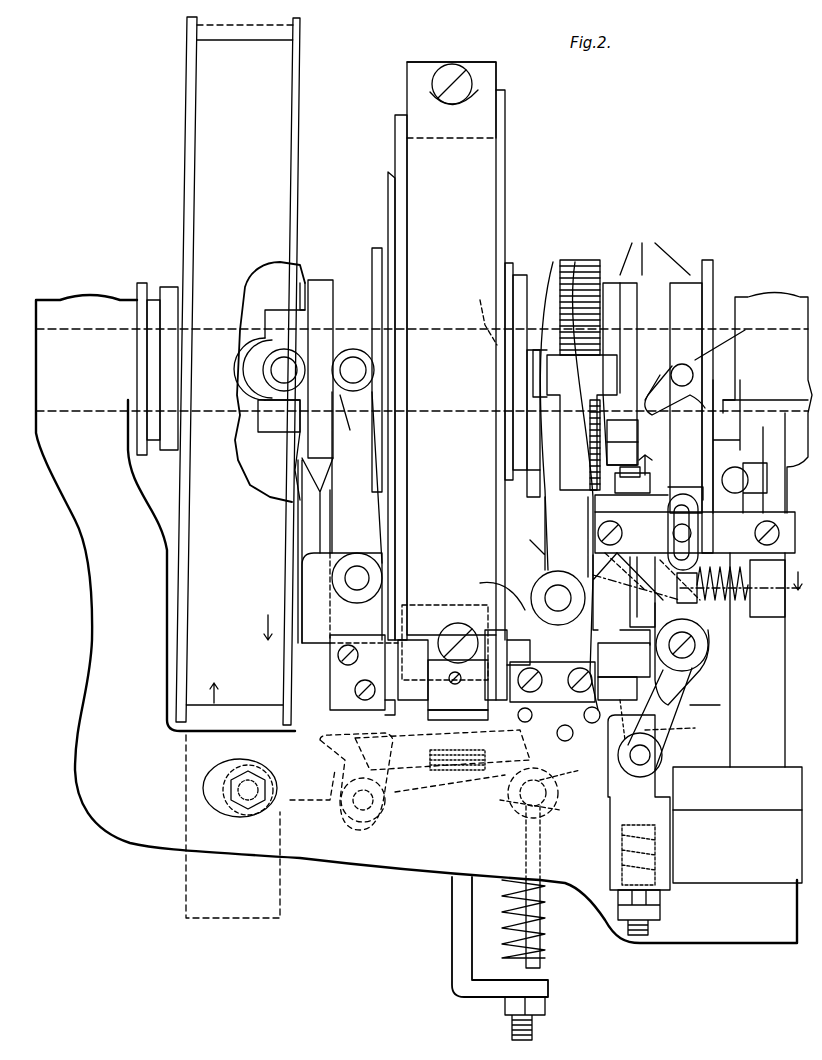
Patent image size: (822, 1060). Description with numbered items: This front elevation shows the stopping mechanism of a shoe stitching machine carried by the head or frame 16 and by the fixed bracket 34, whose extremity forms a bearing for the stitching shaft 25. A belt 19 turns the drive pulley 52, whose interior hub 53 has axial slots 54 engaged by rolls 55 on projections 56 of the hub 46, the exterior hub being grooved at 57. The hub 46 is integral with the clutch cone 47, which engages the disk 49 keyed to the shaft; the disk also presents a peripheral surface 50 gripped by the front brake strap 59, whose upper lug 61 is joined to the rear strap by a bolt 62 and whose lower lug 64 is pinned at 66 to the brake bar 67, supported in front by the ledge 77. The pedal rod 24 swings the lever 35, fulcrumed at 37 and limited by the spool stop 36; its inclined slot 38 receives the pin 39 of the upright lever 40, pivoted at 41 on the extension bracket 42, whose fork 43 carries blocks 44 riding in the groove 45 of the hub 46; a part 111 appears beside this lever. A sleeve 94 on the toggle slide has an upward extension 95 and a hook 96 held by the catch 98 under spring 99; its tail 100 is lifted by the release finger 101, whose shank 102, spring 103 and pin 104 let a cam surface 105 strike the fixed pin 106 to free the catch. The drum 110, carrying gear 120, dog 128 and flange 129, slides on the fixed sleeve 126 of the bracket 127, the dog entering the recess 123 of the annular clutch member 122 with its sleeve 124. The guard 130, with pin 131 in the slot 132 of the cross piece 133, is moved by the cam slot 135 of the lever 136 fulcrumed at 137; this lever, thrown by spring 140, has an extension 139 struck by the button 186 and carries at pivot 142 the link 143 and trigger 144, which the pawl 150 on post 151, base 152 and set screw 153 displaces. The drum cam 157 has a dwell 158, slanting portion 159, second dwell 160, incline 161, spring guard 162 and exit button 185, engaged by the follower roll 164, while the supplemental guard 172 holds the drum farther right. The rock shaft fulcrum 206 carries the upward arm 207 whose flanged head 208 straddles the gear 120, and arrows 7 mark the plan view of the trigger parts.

The section line 7 is at (512, 637).
The head or frame 16 is at (737, 718).
The belt 19 is at (248, 910).
The pedal rod 24 is at (540, 947).
The stitching shaft 25 is at (95, 412).
The fixed bracket 34 is at (416, 619).
The swinging lever 35 is at (312, 795).
The stop 36 is at (442, 747).
The fulcrum 37 is at (230, 815).
The inclined cam or slot 38 is at (340, 770).
The follower or pin 39 is at (358, 815).
The upright lever 40 is at (345, 616).
The pivot 41 is at (360, 566).
The fixed extension bracket 42 is at (342, 598).
The fork 43 is at (357, 477).
The blocks 44 is at (340, 352).
The groove 45 is at (336, 369).
The hub 46 is at (330, 272).
The clutch member or cone 47 is at (385, 182).
The disk 49 is at (392, 125).
The peripheral surface 50 is at (470, 138).
The drive pulley 52 is at (238, 371).
The interior hub 53 is at (252, 312).
The slots 54 is at (258, 375).
The roll 55 is at (275, 275).
The projections 56 is at (290, 395).
The groove 57 is at (150, 283).
The front brake strap 59 is at (456, 381).
The lug 61 is at (490, 70).
The bolt 62 is at (452, 70).
The lug 64 is at (458, 685).
The pin 66 is at (438, 630).
The brake bar 67 is at (413, 670).
The ledge 77 is at (400, 724).
The sleeve 94 is at (617, 688).
The upward extension 95 is at (636, 591).
The downward extension 96 is at (707, 714).
The pivoted catch 98 is at (640, 705).
The spring 99 is at (679, 732).
The tail 100 is at (552, 682).
The finger 101 is at (547, 798).
The shank 102 is at (500, 765).
The spring 103 is at (450, 785).
The pin 104 is at (510, 795).
The cam surface 105 is at (564, 768).
The fixed pin 106 is at (596, 725).
The drum 110 is at (655, 246).
The arm 111 is at (316, 515).
The gear 120 is at (584, 258).
The clutch member 122 is at (522, 262).
The recess 123 is at (473, 311).
The sleeve 124 is at (529, 425).
The fixed sleeve 126 is at (725, 300).
The bearing or bracket 127 is at (767, 403).
The dog or lug 128 is at (543, 290).
The peripheral flange 129 is at (716, 258).
The guard 130 is at (685, 483).
The pin 131 is at (690, 530).
The vertical slot 132 is at (670, 508).
The fixed bridge or cross piece 133 is at (695, 532).
The cam or slot 135 is at (652, 590).
The swinging lever 136 is at (706, 630).
The fulcrum 137 is at (650, 755).
The upward offset extension 139 is at (752, 478).
The spring 140 is at (738, 588).
The pivot 142 is at (705, 648).
The short link 143 is at (623, 629).
The trigger or latch 144 is at (624, 660).
The pawl or finger 150 is at (485, 591).
The post 151 is at (507, 665).
The base 152 is at (490, 705).
The set screw 153 is at (445, 672).
The peripheral cam 157 is at (668, 262).
The dwell 158 is at (645, 338).
The slanting portion 159 is at (713, 356).
The second dwell 160 is at (622, 442).
The elevating incline 161 is at (622, 451).
The spring guard 162 is at (675, 389).
The roll 164 is at (632, 483).
The guard 172 is at (700, 465).
The button 185 is at (580, 500).
The projection or button 186 is at (715, 405).
The fulcrum 206 is at (570, 580).
The upward arm 207 is at (559, 537).
The flanged head 208 is at (575, 420).